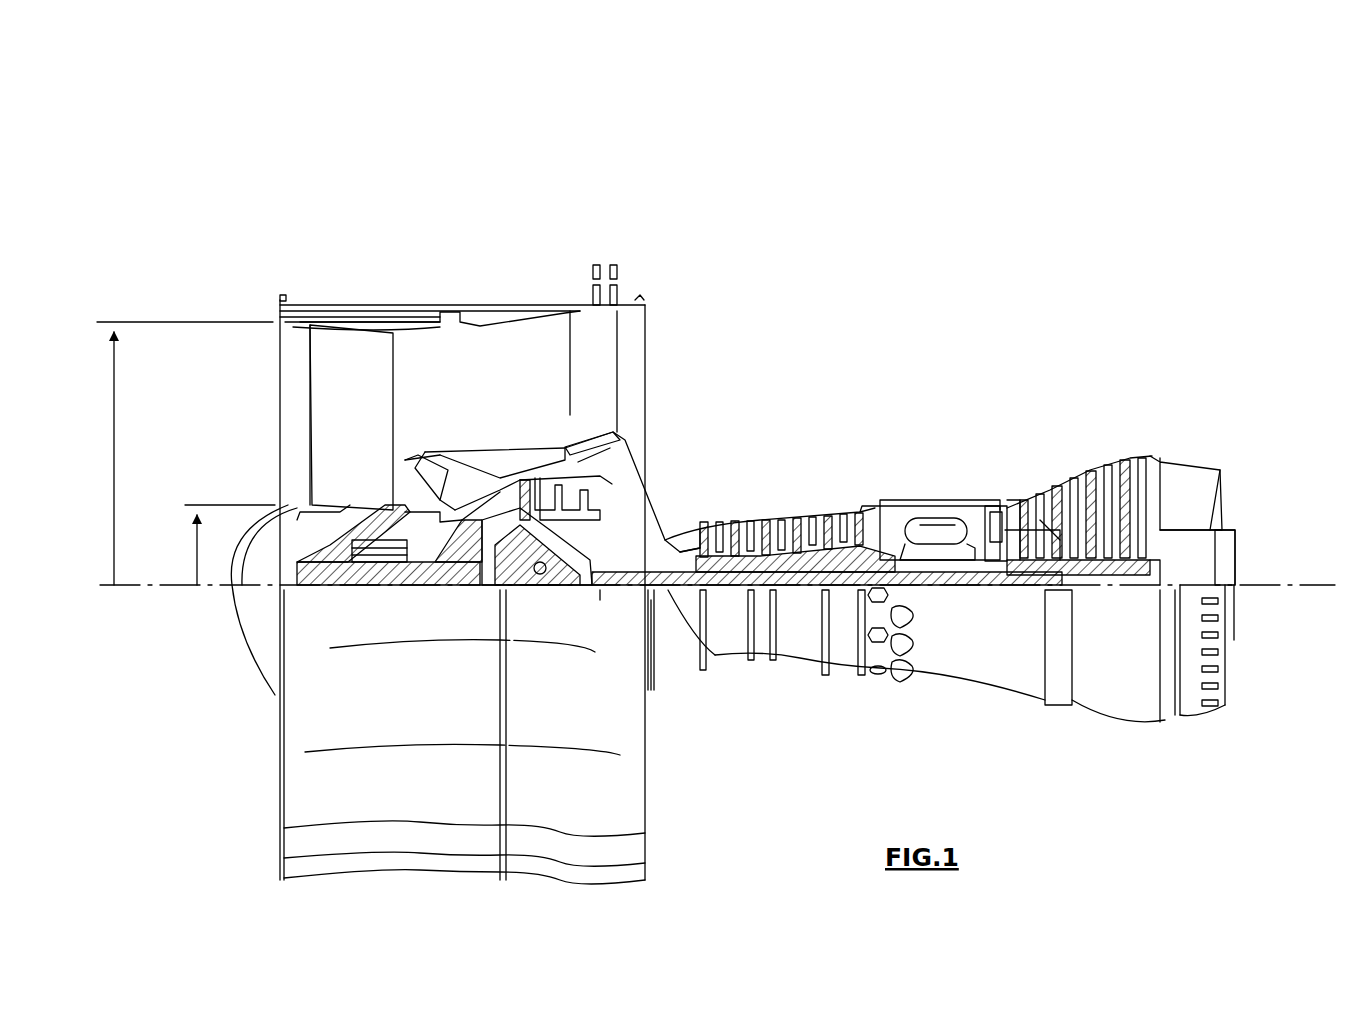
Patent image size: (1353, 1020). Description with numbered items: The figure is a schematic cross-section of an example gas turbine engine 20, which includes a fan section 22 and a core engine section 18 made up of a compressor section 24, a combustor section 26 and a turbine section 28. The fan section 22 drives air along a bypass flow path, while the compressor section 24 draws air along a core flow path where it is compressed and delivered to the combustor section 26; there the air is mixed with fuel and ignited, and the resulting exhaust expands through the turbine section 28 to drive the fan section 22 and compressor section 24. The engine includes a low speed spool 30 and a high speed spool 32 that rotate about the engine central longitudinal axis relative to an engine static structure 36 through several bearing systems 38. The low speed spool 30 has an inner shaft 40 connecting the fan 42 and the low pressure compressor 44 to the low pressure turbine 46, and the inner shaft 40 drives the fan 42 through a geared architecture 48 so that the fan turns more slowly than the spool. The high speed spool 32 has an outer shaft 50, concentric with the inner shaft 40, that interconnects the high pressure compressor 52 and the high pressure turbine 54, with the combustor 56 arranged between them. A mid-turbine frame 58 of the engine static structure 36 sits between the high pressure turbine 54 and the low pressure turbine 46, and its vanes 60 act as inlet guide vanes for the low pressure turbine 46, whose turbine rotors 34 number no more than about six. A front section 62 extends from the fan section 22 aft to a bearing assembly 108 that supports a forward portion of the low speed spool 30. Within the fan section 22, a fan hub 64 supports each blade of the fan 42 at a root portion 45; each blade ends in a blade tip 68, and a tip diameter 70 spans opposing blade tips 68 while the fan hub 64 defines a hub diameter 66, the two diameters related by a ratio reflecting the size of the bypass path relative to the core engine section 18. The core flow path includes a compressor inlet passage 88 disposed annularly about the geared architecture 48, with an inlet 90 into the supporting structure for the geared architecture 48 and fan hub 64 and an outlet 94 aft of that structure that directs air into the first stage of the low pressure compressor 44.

The core engine section 18 is at (925, 354).
The gas turbine engine 20 is at (855, 190).
The fan section 22 is at (490, 265).
The compressor section 24 is at (915, 423).
The combustor section 26 is at (1005, 423).
The turbine section 28 is at (1185, 423).
The low speed spool 30 is at (800, 598).
The high speed spool 32 is at (843, 520).
The turbine rotors 34 is at (1135, 555).
The engine static structure 36 is at (843, 682).
The bearing systems 38 is at (358, 585).
The inner shaft 40 is at (668, 610).
The fan 42 is at (351, 417).
The low pressure compressor section 44 is at (612, 442).
The root portion 45 is at (352, 488).
The low pressure turbine section 46 is at (1108, 478).
The geared architecture 48 is at (470, 575).
The outer shaft 50 is at (922, 588).
The high pressure compressor section 52 is at (770, 548).
The high pressure turbine section 54 is at (985, 506).
The combustor 56 is at (925, 525).
The mid-turbine frame 58 is at (1026, 496).
The vanes 60 is at (1062, 558).
The front section 62 is at (305, 655).
The fan hub 64 is at (313, 536).
The hub diameter 66 is at (197, 546).
The blade tip 68 is at (348, 322).
The tip diameter 70 is at (114, 426).
The compressor inlet passage 88 is at (480, 492).
The inlet 90 is at (414, 452).
The outlet 94 is at (520, 478).
The bearing assembly 108 is at (542, 580).